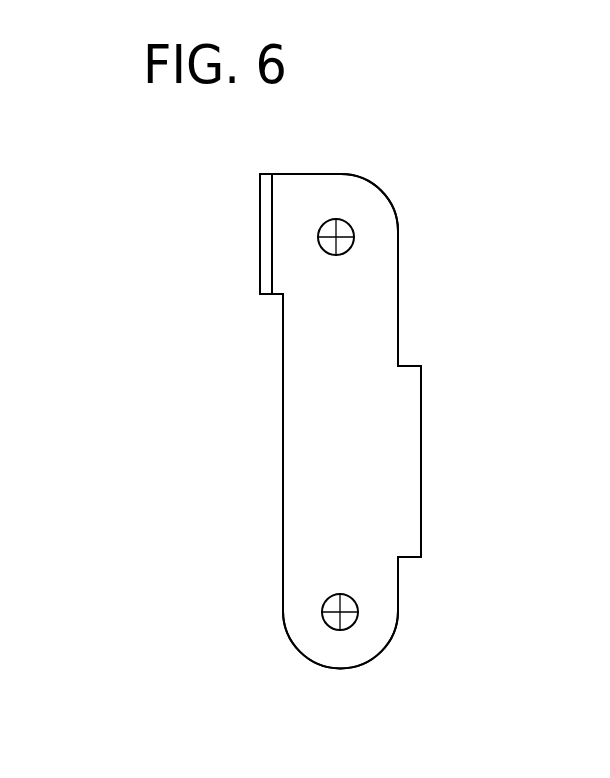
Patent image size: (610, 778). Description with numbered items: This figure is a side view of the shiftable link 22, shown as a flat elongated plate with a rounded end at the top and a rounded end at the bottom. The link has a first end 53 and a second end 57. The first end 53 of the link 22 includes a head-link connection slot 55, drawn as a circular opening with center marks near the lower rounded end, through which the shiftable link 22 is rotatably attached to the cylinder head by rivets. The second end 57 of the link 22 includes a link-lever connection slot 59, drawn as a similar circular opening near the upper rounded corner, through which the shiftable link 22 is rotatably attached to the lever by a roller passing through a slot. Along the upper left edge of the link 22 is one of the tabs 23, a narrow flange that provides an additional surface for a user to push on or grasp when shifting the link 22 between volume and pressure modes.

The shiftable link 22 is at (498, 493).
The tabs 23 is at (270, 207).
The first end 53 is at (293, 649).
The head-link connection slot 55 is at (353, 625).
The second end 57 is at (380, 193).
The link-lever connection slot 59 is at (347, 250).